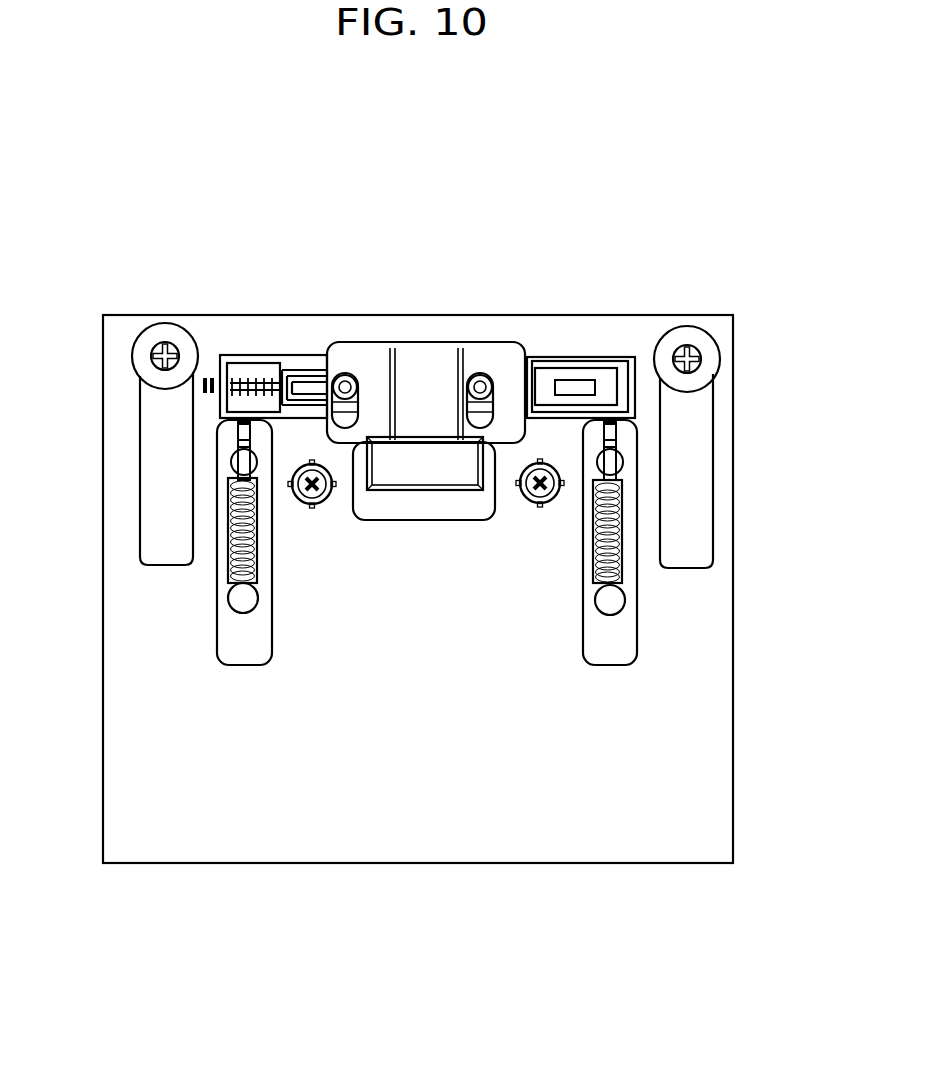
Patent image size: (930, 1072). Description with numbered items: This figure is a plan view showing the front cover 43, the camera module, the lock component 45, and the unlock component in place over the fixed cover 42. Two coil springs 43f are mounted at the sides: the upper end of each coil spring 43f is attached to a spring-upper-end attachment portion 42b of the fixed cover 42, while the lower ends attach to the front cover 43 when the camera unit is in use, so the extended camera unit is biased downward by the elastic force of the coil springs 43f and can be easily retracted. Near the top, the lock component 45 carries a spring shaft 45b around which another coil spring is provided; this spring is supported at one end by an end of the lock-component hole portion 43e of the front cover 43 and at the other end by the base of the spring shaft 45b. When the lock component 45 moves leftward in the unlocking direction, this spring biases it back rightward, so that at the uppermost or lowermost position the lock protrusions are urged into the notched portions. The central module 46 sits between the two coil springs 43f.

The fixed cover 42 is at (157, 523).
The spring-upper-end attachment portion 42b is at (240, 442).
The front cover 43 is at (408, 818).
The lock-component hole portion 43e is at (608, 357).
The coil spring 43f is at (257, 555).
The lock component 45 is at (575, 380).
The spring shaft 45b is at (240, 357).
The cover member 46 is at (400, 348).